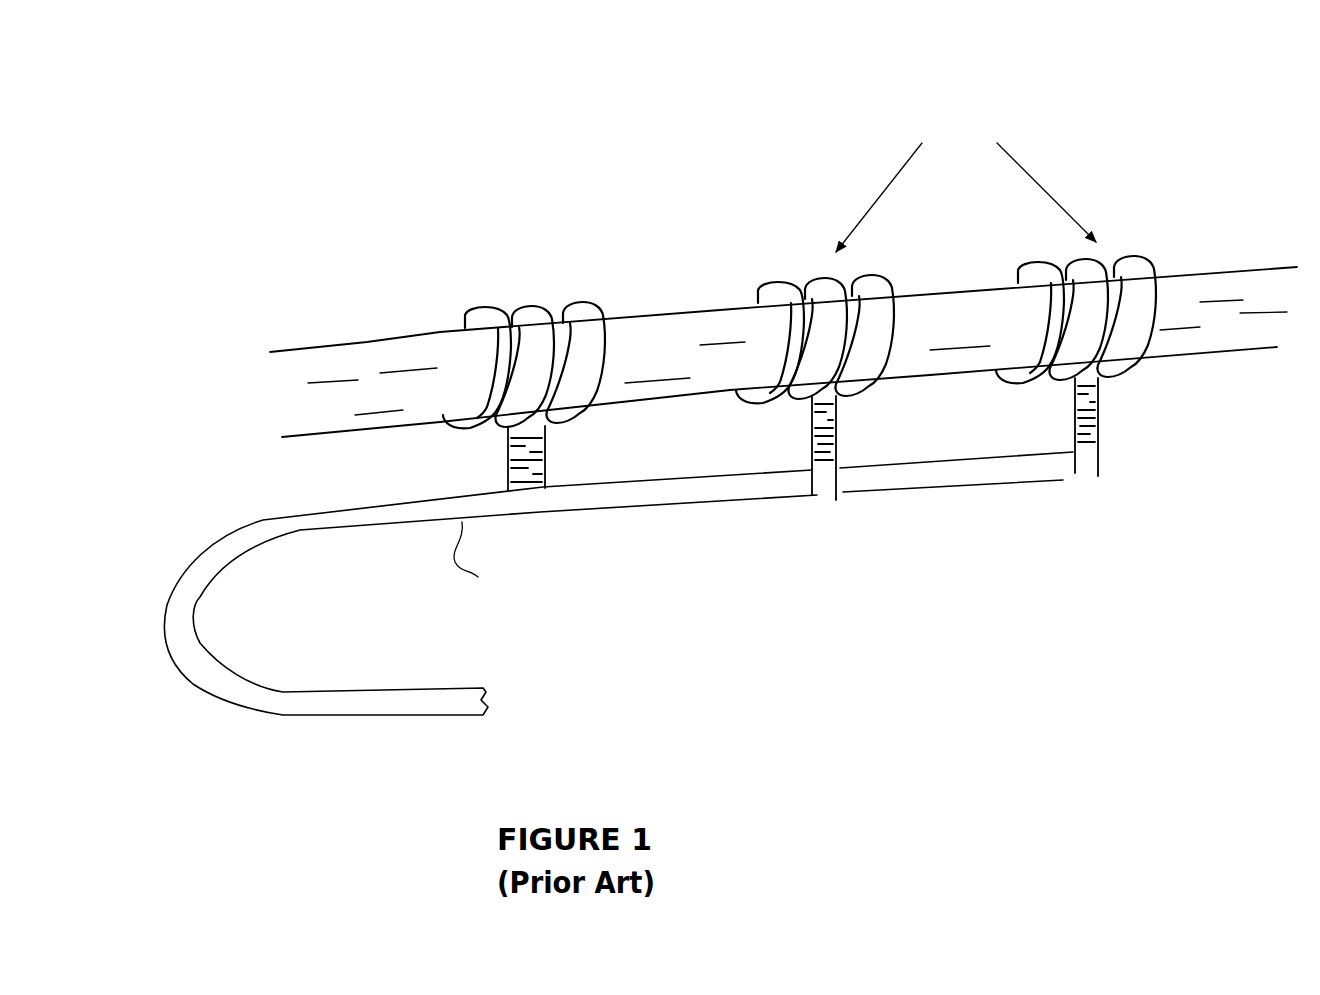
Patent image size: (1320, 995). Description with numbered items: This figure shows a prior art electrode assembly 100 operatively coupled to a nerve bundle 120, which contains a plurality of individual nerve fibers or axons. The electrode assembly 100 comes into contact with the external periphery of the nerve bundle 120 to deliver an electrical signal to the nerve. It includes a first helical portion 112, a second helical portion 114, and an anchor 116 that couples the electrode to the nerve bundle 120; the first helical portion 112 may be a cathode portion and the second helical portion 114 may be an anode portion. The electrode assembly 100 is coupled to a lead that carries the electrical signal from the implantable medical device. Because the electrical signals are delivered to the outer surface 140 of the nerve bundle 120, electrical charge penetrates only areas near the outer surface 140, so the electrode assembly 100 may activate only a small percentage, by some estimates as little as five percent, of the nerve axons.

The electrode assembly 100 is at (718, 372).
The first helical portion 112 is at (1168, 252).
The second helical portion 114 is at (895, 279).
The anchor 116 is at (603, 300).
The nerve bundle 120 is at (663, 277).
The outer surface 140 is at (783, 243).